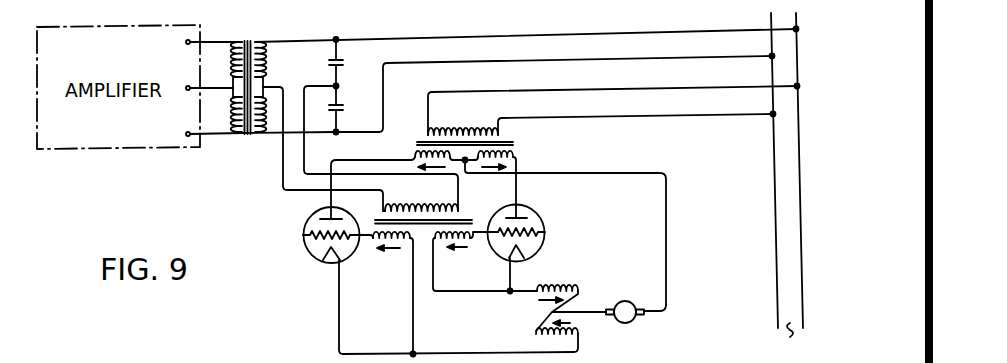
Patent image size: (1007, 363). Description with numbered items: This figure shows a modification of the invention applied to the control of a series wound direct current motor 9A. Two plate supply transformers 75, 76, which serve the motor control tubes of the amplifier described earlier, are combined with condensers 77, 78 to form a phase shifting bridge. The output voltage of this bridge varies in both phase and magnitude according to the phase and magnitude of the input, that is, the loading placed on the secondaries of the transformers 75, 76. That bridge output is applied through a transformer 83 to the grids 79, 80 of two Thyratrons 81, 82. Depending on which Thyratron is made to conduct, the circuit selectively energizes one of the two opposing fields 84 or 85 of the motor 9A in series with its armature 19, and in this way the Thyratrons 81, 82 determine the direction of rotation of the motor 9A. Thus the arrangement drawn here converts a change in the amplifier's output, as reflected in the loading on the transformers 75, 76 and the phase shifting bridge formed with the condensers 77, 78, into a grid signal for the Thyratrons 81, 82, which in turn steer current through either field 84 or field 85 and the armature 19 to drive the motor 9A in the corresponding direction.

The plate supply transformer 75 is at (224, 30).
The plate supply transformer 76 is at (226, 144).
The condenser 77 is at (349, 63).
The condenser 78 is at (350, 108).
The grid 79 is at (311, 244).
The grid 80 is at (539, 229).
The Thyratron 81 is at (318, 260).
The Thyratron 82 is at (545, 246).
The transformer 83 is at (468, 212).
The opposing field 84 is at (558, 288).
The opposing field 85 is at (548, 342).
The series wound direct current motor 9A is at (639, 296).
The armature 19 is at (624, 324).